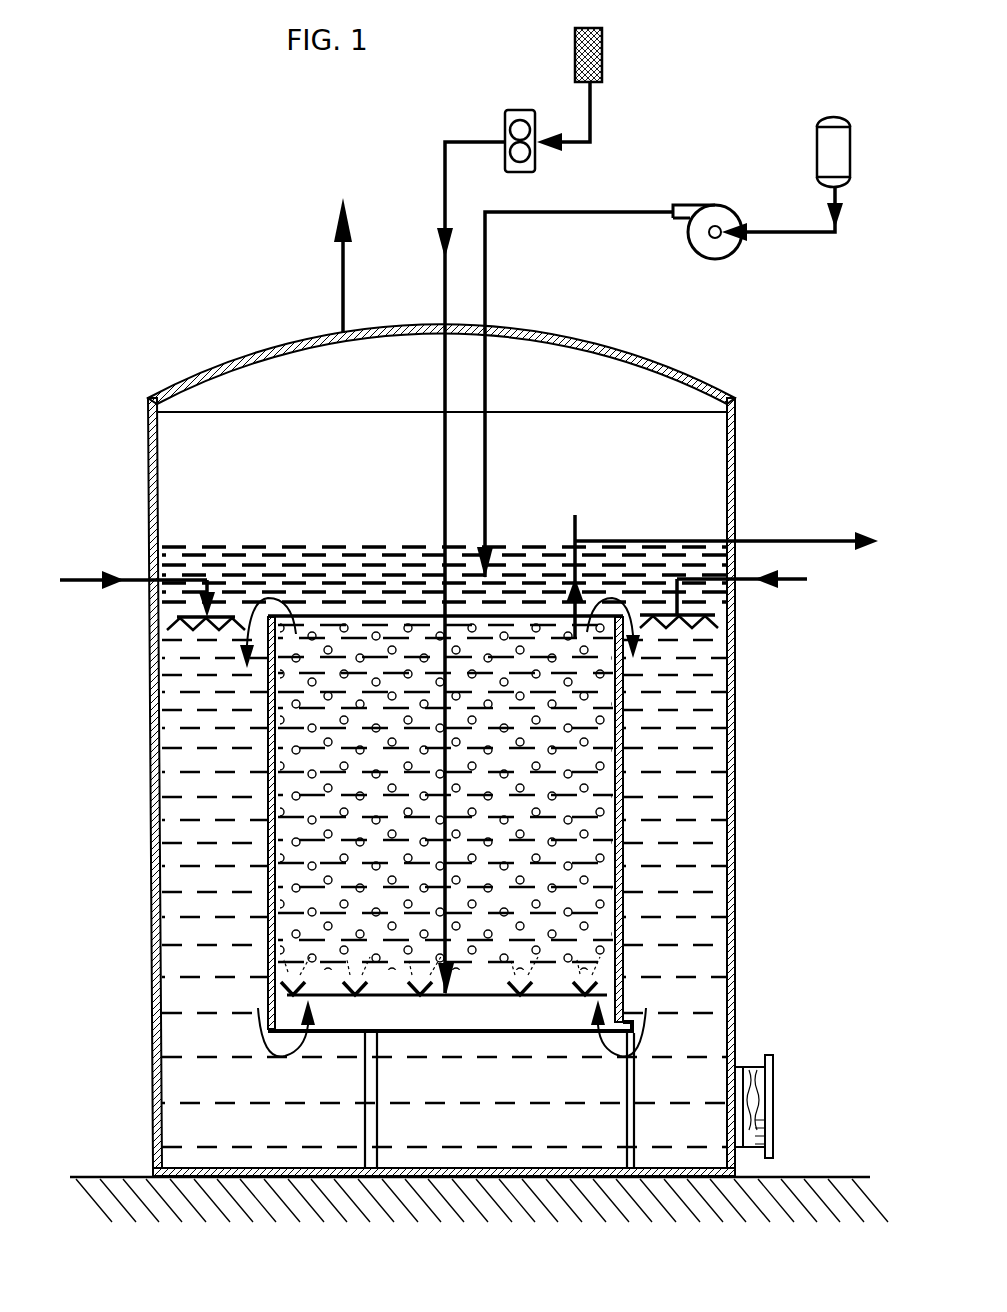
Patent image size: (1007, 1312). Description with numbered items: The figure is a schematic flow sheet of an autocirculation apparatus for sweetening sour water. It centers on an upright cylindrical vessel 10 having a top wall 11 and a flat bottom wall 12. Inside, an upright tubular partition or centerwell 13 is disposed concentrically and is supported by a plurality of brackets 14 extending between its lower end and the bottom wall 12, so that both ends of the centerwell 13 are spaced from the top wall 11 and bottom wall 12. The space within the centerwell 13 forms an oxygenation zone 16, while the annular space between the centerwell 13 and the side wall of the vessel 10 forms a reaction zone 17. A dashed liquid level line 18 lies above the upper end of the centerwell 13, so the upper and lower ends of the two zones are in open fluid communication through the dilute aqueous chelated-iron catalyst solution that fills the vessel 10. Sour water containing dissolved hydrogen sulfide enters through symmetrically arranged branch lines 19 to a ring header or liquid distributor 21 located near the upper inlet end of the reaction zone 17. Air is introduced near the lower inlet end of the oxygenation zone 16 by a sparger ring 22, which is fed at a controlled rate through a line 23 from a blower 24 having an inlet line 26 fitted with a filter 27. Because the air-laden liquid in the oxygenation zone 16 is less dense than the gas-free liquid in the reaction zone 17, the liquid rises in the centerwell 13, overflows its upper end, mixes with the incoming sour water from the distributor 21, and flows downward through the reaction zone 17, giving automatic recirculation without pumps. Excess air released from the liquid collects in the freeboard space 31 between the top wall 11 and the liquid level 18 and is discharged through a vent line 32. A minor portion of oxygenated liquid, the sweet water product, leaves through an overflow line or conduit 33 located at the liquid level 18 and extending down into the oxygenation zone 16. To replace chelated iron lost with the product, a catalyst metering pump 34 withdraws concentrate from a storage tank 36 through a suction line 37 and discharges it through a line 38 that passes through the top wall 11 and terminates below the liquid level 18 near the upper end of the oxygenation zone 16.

The upright cylindrical vessel 10 is at (746, 794).
The top wall 11 is at (232, 362).
The flat bottom wall 12 is at (537, 1178).
The tubular partition or centerwell 13 is at (625, 930).
The brackets 14 is at (363, 1078).
The oxygenation zone 16 is at (510, 795).
The reaction zone 17 is at (222, 797).
The liquid level line 18 is at (250, 548).
The branch lines 19 is at (80, 578).
The ring header or liquid distributor 21 is at (197, 603).
The sparger ring 22 is at (500, 997).
The air supply line 23 is at (445, 185).
The blower 24 is at (512, 110).
The inlet line 26 is at (592, 88).
The filter 27 is at (603, 30).
The freeboard space 31 is at (402, 479).
The vent line 32 is at (343, 258).
The overflow line or conduit 33 is at (822, 541).
The catalyst metering pump 34 is at (715, 205).
The storage tank 36 is at (851, 143).
The suction line 37 is at (810, 234).
The catalyst discharge line 38 is at (485, 235).